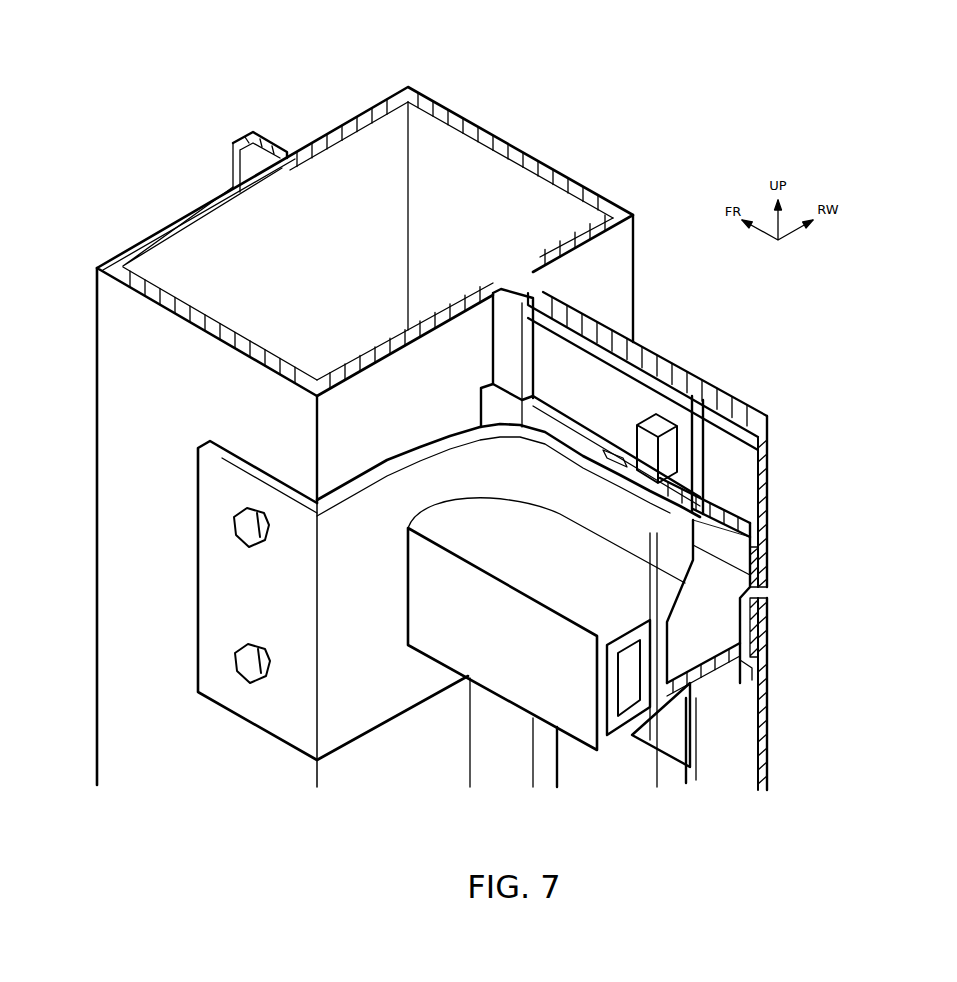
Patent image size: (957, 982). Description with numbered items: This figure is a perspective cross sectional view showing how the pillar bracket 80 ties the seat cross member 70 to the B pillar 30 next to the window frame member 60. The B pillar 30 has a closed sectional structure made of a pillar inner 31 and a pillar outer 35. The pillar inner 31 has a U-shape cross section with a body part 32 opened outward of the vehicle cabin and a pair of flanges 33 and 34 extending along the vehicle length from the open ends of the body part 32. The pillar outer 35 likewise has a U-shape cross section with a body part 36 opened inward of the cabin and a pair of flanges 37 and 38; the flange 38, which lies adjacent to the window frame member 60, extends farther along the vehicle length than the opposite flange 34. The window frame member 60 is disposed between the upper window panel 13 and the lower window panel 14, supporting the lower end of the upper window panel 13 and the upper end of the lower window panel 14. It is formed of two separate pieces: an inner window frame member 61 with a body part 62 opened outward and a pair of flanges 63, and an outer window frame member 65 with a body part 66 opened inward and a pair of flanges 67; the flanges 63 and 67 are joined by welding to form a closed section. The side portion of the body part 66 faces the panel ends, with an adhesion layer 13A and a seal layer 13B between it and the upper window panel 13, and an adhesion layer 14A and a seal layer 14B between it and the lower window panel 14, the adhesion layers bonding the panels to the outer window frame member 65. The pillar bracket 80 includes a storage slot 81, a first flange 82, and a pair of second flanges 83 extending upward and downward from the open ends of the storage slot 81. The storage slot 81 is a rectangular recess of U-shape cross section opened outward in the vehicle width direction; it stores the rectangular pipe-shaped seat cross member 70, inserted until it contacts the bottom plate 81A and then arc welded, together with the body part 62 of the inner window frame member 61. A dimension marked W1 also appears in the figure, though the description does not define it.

The upper window panel 13 is at (722, 418).
The adhesion layer 13A is at (770, 552).
The seal layer 13B is at (772, 577).
The lower window panel 14 is at (772, 757).
The adhesion layer 14A is at (772, 640).
The seal layer 14B is at (772, 621).
The B pillar 30 is at (150, 21).
The pillar inner 31 is at (167, 224).
The body part 32 is at (97, 326).
The flange 33 is at (243, 160).
The flange 34 is at (507, 322).
The pillar outer 35 is at (350, 120).
The body part 36 is at (527, 150).
The flange 37 is at (274, 133).
The flange 38 is at (553, 337).
The window frame member 60 is at (853, 710).
The inner window frame member 61 is at (745, 668).
The body part 62 is at (683, 670).
The flanges 63 is at (732, 503).
The outer window frame member 65 is at (772, 665).
The body part 66 is at (738, 614).
The flanges 67 is at (590, 433).
The seat cross member 70 is at (612, 700).
The pillar bracket 80 is at (195, 570).
The storage slot 81 is at (617, 743).
The bottom plate 81A is at (603, 667).
The first flange 82 is at (213, 493).
The second flange 83 is at (630, 504).
The width W1 is at (672, 530).